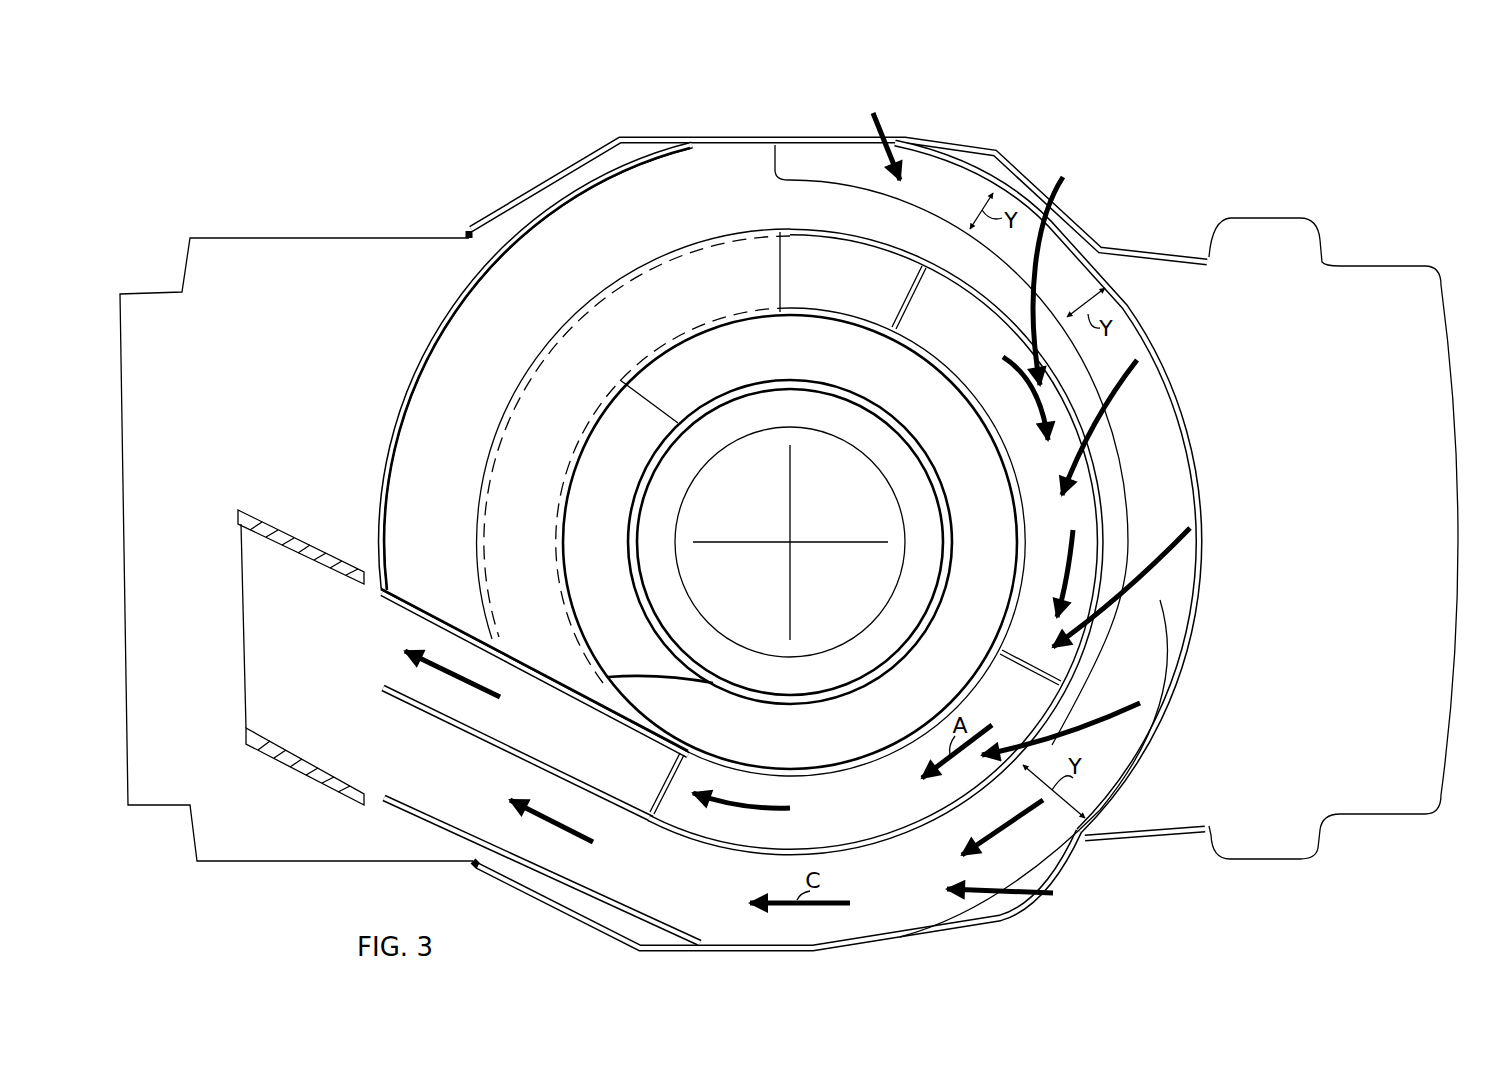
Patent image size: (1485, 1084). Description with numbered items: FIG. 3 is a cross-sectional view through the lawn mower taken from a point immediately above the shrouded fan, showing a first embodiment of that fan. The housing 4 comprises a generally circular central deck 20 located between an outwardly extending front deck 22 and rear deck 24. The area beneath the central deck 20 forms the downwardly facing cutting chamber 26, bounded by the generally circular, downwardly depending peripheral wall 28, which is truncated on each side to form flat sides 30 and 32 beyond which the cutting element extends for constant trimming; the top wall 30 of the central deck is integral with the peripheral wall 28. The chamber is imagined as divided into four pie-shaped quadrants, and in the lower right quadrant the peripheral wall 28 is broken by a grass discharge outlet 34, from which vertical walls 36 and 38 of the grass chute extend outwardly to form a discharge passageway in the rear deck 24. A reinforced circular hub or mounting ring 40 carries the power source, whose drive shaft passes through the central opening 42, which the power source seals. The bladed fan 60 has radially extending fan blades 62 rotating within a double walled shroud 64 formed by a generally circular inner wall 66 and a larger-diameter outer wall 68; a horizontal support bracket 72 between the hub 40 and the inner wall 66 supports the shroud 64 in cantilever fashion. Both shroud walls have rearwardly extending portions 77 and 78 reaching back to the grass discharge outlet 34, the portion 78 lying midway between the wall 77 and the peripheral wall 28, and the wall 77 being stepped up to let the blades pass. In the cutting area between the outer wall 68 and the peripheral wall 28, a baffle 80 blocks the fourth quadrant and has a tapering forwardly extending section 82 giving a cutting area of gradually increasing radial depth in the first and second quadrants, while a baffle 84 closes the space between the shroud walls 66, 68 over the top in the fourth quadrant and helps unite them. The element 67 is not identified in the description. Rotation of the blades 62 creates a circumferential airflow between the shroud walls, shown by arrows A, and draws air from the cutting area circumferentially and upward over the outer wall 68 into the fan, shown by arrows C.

The housing 4 is at (1108, 197).
The central deck 20 is at (968, 166).
The front deck 22 is at (1331, 534).
The rear deck 24 is at (217, 451).
The cutting chamber 26 is at (1147, 463).
The peripheral wall 28 is at (1150, 333).
The top wall 30 is at (731, 131).
The flat right side 32 is at (820, 956).
The grass discharge outlet 34 is at (374, 655).
The vertical wall 36 is at (302, 522).
The vertical wall 38 is at (291, 769).
The hub 40 is at (706, 407).
The central opening 42 is at (737, 488).
The fan 60 is at (700, 238).
The fan blades 62 is at (920, 305).
The shroud 64 is at (783, 766).
The inner shroud wall 66 is at (828, 775).
The short partition 67 is at (1040, 660).
The outer shroud wall 68 is at (830, 842).
The support bracket 72 is at (583, 532).
The rearwardly extending portion of inner shroud wall 77 is at (434, 616).
The rearwardly extending portion of outer shroud wall 78 is at (458, 721).
The baffle 80 is at (543, 268).
The forwardly extending section 82 is at (862, 226).
The baffle 84 is at (599, 346).